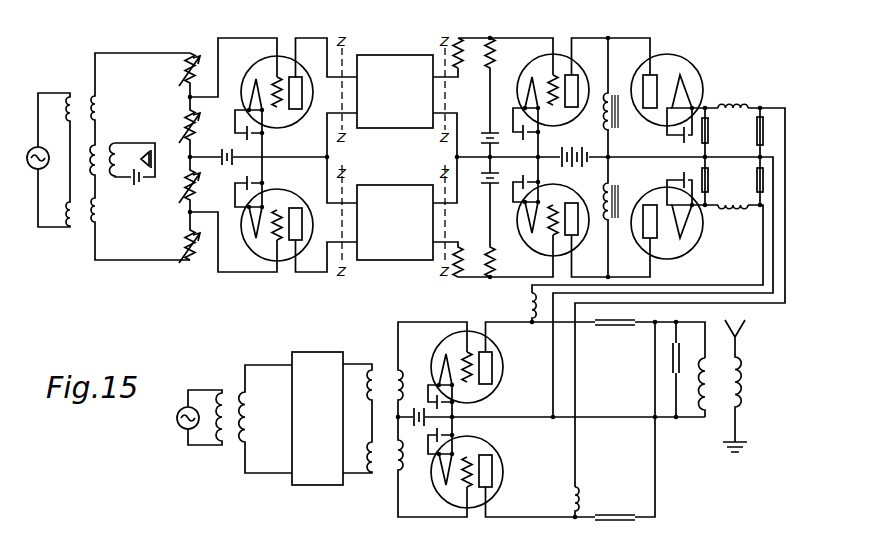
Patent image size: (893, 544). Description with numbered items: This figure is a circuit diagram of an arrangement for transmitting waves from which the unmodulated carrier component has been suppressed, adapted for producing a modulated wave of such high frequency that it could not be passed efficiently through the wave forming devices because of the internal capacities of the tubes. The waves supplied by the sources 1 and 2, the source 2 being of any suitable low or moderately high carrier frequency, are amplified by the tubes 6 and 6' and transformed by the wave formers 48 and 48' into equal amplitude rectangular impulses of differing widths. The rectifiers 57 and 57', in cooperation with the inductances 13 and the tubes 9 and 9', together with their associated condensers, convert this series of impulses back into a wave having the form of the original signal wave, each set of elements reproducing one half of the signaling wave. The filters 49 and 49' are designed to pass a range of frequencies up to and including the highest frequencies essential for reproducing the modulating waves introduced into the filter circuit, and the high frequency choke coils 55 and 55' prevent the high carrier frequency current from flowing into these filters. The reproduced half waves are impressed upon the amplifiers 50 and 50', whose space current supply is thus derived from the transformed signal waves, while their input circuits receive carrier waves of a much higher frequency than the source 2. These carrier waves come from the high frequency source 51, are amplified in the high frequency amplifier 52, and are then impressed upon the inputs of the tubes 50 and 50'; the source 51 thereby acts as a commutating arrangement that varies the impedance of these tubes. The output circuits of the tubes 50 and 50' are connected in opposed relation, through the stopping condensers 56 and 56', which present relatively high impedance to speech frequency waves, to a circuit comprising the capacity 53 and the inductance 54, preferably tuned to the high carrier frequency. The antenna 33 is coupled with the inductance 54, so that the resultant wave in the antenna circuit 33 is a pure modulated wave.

The source 1 is at (136, 143).
The source 2 is at (30, 149).
The tube 6 is at (272, 87).
The tube 6' is at (270, 229).
The wave former 48 is at (395, 104).
The wave former 48' is at (395, 212).
The tube 9 is at (547, 84).
The tube 9' is at (546, 228).
The inductances 13 is at (618, 122).
The rectifier 57 is at (685, 90).
The rectifier 57' is at (686, 225).
The filter 49 is at (733, 127).
The filter 49' is at (732, 187).
The high frequency choke coil 55 is at (507, 307).
The high frequency choke coil 55' is at (597, 497).
The amplifier 50 is at (485, 367).
The amplifier 50' is at (487, 472).
The high frequency source 51 is at (180, 428).
The high frequency amplifier 52 is at (317, 418).
The stopping condenser 56 is at (615, 336).
The stopping condenser 56' is at (615, 529).
The capacity 53 is at (668, 364).
The inductance 54 is at (702, 405).
The antenna 33 is at (744, 398).